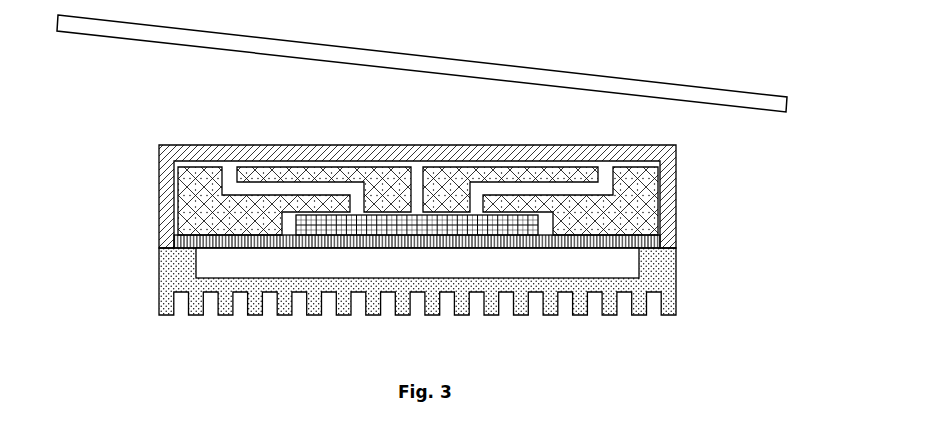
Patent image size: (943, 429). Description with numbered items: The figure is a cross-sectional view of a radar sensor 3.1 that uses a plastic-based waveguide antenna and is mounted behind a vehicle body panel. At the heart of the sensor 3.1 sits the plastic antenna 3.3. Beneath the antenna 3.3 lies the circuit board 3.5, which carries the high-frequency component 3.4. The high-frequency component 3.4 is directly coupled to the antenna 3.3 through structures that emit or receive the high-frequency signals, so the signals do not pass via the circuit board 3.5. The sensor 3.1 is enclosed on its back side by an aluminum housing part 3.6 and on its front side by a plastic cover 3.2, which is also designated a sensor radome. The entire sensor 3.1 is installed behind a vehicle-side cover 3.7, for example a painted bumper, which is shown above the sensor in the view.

The radar sensor 3.1 is at (248, 265).
The plastic cover 3.2 is at (645, 150).
The plastic antenna 3.3 is at (640, 188).
The high-frequency component 3.4 is at (541, 221).
The circuit board 3.5 is at (655, 244).
The aluminum housing part 3.6 is at (648, 272).
The vehicle-side cover 3.7 is at (640, 88).